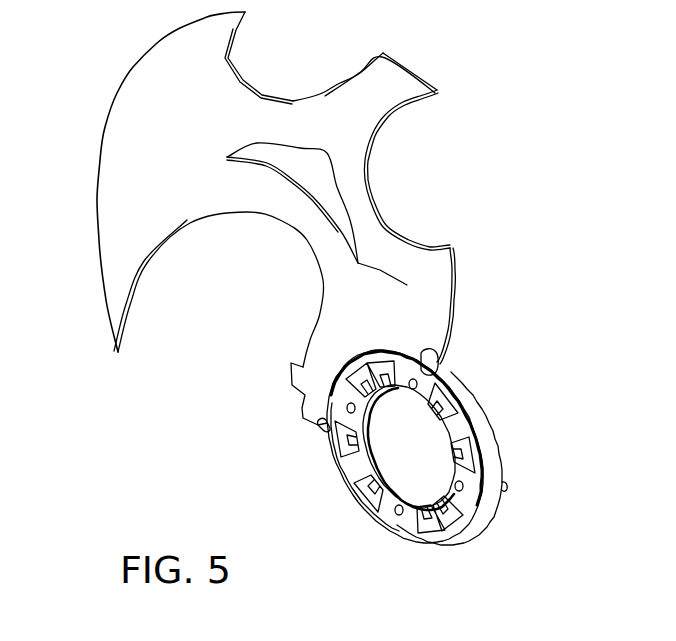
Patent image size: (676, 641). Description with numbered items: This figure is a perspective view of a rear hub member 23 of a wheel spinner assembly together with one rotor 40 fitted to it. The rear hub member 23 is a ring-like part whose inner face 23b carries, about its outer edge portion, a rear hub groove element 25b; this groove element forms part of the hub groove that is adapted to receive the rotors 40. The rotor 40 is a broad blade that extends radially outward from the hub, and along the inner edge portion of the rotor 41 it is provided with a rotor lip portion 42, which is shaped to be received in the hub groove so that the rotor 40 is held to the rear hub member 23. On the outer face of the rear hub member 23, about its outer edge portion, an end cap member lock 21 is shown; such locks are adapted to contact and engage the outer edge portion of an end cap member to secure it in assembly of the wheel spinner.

The rotor 40 is at (94, 209).
The rotor lip portion 42 is at (303, 367).
The inner edge portion of the rotor 41 is at (320, 427).
The rear hub member 23 is at (414, 435).
The inner face of the rear hub member 23b is at (335, 462).
The rear hub groove element 25b is at (476, 426).
The end cap member lock 21 is at (506, 487).